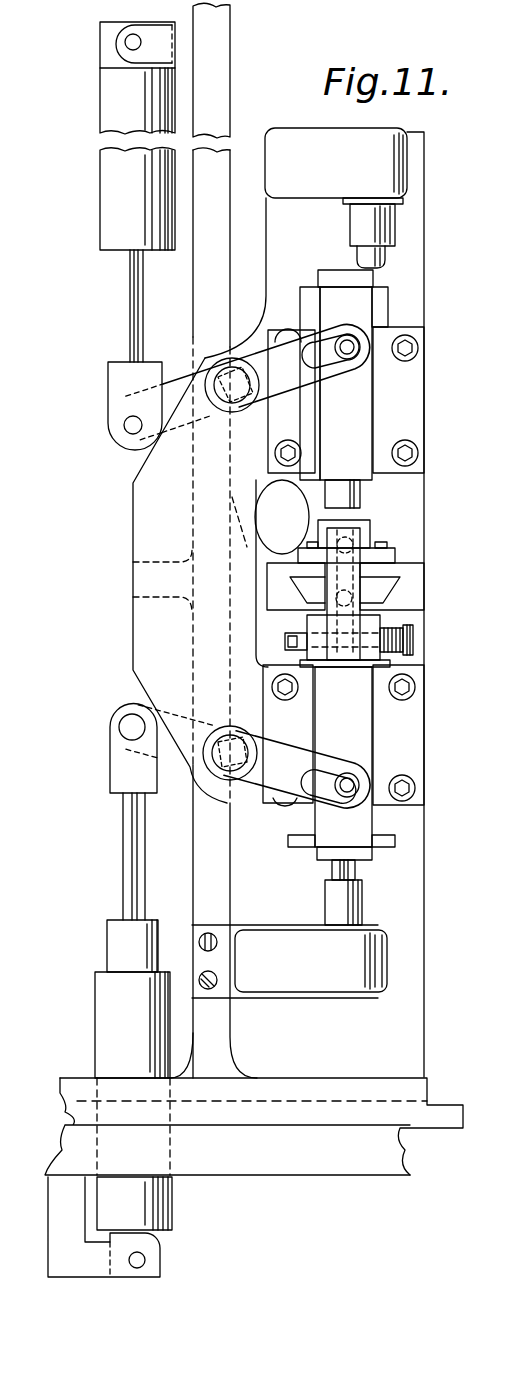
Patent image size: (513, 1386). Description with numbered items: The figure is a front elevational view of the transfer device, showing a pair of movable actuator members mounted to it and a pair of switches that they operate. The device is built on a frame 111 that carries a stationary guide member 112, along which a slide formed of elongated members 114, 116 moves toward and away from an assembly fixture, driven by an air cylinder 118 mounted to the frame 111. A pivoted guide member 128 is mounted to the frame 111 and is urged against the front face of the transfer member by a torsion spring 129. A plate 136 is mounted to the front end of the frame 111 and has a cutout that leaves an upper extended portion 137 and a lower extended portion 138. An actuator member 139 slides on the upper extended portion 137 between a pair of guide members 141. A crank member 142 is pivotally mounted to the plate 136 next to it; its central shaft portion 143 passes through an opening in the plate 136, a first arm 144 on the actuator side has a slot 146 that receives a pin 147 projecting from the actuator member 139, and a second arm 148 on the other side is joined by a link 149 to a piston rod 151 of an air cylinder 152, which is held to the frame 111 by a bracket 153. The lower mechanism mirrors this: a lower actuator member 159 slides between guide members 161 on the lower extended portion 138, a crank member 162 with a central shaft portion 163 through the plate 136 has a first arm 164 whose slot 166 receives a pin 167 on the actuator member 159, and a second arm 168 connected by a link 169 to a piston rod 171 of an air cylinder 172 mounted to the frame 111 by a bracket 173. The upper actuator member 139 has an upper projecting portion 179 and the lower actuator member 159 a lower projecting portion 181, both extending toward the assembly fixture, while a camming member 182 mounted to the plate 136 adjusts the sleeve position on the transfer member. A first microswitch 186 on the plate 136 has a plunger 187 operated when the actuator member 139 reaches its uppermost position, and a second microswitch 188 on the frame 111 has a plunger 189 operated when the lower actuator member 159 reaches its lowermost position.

The frame 111 is at (212, 1032).
The stationary guide member 112 is at (270, 613).
The elongated member 114 is at (408, 580).
The elongated member 116 is at (270, 577).
The air cylinder 118 is at (265, 498).
The guide member 128 is at (358, 562).
The torsion spring 129 is at (415, 627).
The plate 136 is at (153, 497).
The upper extended portion 137 is at (492, 390).
The lower extended portion 138 is at (432, 718).
The actuator member 139 is at (363, 437).
The guide members 141 is at (417, 365).
The crank member 142 is at (220, 423).
The central shaft portion 143 is at (212, 352).
The first arm 144 is at (302, 347).
The slot 146 is at (337, 372).
The pin 147 is at (342, 342).
The second arm 148 is at (163, 388).
The link 149 is at (110, 421).
The piston rod 151 is at (130, 293).
The air cylinder 152 is at (108, 188).
The bracket 153 is at (182, 40).
The lower actuator member 159 is at (357, 698).
The guide members 161 is at (265, 687).
The crank member 162 is at (213, 722).
The central shaft portion 163 is at (243, 793).
The first arm 164 is at (272, 750).
The slot 166 is at (337, 745).
The pin 167 is at (367, 770).
The second arm 168 is at (167, 740).
The link 169 is at (117, 760).
The piston rod 171 is at (137, 853).
The air cylinder 172 is at (112, 1000).
The bracket 173 is at (100, 1268).
The upper projecting portion 179 is at (325, 270).
The lower projecting portion 181 is at (320, 853).
The camming member 182 is at (360, 498).
The first microswitch 186 is at (385, 140).
The plunger 187 is at (390, 253).
The second microswitch 188 is at (377, 957).
The plunger 189 is at (348, 872).